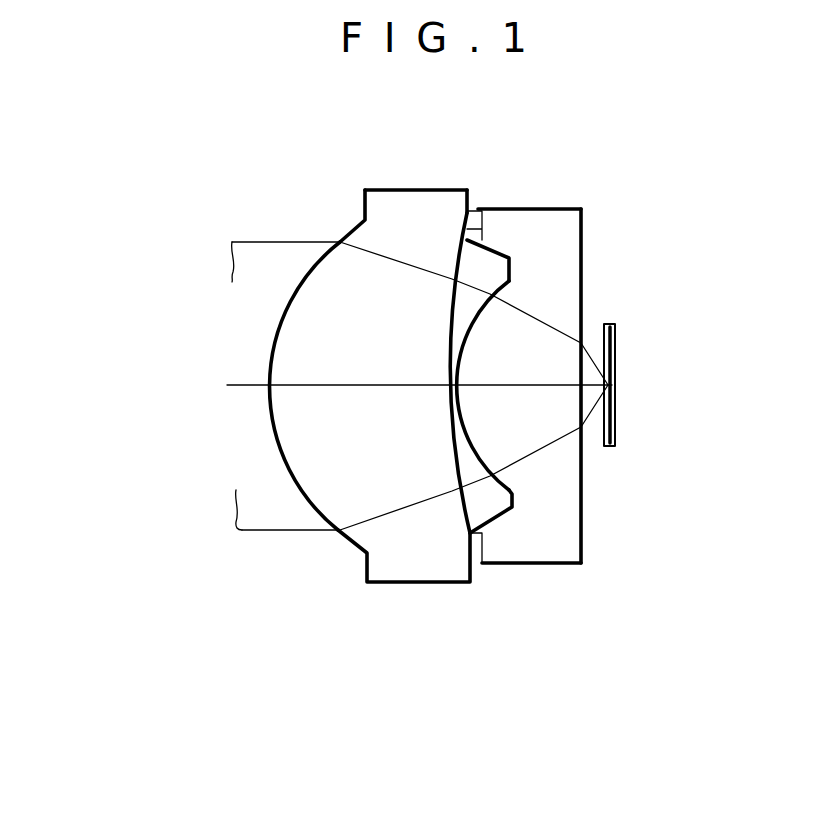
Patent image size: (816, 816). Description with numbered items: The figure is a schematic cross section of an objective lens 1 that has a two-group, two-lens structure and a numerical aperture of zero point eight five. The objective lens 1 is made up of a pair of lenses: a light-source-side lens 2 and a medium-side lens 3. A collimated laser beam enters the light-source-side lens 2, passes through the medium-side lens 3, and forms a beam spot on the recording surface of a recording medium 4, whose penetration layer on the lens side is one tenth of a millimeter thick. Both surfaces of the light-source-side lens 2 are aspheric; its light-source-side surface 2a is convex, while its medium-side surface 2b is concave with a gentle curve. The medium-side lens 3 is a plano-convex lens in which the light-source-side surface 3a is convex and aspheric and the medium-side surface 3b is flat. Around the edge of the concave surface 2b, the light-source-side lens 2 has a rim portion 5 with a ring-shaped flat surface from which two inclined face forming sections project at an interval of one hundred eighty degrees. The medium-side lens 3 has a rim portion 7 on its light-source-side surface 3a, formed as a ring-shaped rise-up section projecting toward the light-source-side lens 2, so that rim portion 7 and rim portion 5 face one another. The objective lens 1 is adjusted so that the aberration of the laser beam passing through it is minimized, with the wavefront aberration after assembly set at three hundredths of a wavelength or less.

The objective lens 1 is at (503, 144).
The light-source-side lens 2 is at (348, 500).
The light-source-side surface 2a is at (291, 462).
The medium-side surface 2b is at (462, 480).
The medium-side lens 3 is at (568, 455).
The light-source-side surface 3a is at (478, 462).
The medium-side surface 3b is at (582, 508).
The recording medium 4 is at (608, 410).
The rim portion 5 is at (471, 192).
The rim portion 7 is at (470, 227).